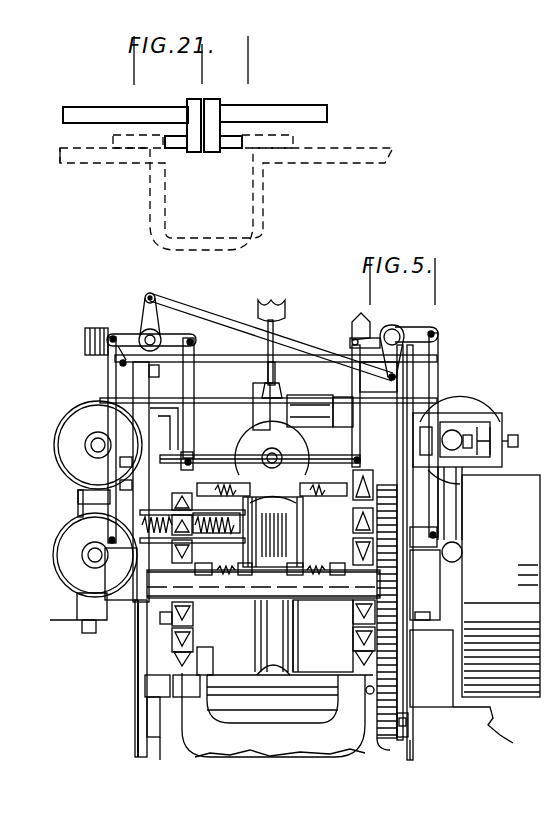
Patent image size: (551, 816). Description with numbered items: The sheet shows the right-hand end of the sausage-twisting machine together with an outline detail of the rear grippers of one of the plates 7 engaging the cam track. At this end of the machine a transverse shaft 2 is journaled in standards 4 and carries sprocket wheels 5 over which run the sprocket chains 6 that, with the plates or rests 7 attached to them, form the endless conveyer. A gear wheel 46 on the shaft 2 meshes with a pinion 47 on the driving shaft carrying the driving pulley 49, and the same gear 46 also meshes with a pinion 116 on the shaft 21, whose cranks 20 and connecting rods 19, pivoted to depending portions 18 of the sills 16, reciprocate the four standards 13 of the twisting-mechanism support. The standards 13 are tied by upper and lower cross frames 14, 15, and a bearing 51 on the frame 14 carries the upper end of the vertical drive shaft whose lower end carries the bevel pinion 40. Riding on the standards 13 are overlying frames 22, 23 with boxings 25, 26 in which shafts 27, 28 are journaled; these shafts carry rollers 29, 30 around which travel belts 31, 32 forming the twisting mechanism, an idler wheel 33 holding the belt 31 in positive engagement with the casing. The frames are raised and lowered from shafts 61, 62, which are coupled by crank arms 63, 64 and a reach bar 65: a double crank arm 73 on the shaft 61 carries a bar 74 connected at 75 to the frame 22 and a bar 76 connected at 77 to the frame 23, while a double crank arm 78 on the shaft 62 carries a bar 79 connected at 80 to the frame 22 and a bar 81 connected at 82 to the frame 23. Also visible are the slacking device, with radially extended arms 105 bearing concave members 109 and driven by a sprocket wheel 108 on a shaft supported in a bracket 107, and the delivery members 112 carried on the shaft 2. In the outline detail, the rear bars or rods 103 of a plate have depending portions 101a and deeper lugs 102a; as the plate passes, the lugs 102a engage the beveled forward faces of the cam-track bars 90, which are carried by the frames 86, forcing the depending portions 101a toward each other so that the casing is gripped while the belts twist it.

In FIG. 21, the depending portions 101a is at (190, 118).
In FIG. 21, the laterally extended lugs 102a is at (178, 140).
In FIG. 21, the bars or rods 103 is at (340, 98).
In FIG. 21, the frames 86 is at (226, 192).
In FIG. 21, the bars 90 is at (120, 143).
In FIG. 5, the transverse shaft 2 is at (263, 622).
In FIG. 5, the standards or uprights 4 is at (272, 573).
In FIG. 5, the sprocket wheels 5 is at (170, 642).
In FIG. 5, the sprocket chains 6 is at (224, 547).
In FIG. 5, the plates or rests 7 is at (323, 636).
In FIG. 5, the standards 13 is at (140, 470).
In FIG. 5, the cross frame or brace 14 is at (233, 358).
In FIG. 5, the cross frame or brace 15 is at (165, 623).
In FIG. 5, the sills or braces 16 is at (150, 663).
In FIG. 5, the depending portions 18 is at (143, 685).
In FIG. 5, the connecting rods 19 is at (135, 733).
In FIG. 5, the cranks 20 is at (303, 756).
In FIG. 5, the shaft 21 is at (275, 695).
In FIG. 5, the frame 22 is at (345, 461).
In FIG. 5, the frame 23 is at (347, 548).
In FIG. 5, the boxings 25 is at (92, 457).
In FIG. 5, the boxings 26 is at (500, 458).
In FIG. 5, the shaft 27 is at (85, 450).
In FIG. 5, the shaft 28 is at (72, 595).
In FIG. 5, the rollers or pulleys 29 is at (77, 427).
In FIG. 5, the rollers or pulleys 30 is at (62, 563).
In FIG. 5, the belt 31 is at (252, 386).
In FIG. 5, the belt 32 is at (58, 555).
In FIG. 5, the idler wheel 33 is at (272, 448).
In FIG. 5, the bevel pinion 40 is at (88, 624).
In FIG. 5, the gear wheel 46 is at (397, 641).
In FIG. 5, the pinion 47 is at (400, 588).
In FIG. 5, the driving pulley 49 is at (496, 609).
In FIG. 5, the bearing 51 is at (85, 339).
In FIG. 5, the shaft 61 is at (138, 333).
In FIG. 5, the shaft 62 is at (408, 330).
In FIG. 5, the crank arm 63 is at (147, 298).
In FIG. 5, the crank arm 64 is at (394, 358).
In FIG. 5, the reach bar or lever 65 is at (236, 300).
In FIG. 5, the double crank arm 73 is at (167, 337).
In FIG. 5, the bar 74 is at (194, 378).
In FIG. 5, the connection 75 is at (193, 465).
In FIG. 5, the bar 76 is at (110, 368).
In FIG. 5, the connection 77 is at (98, 538).
In FIG. 5, the double crank arm 78 is at (384, 332).
In FIG. 5, the bar 79 is at (357, 375).
In FIG. 5, the connection 80 is at (352, 463).
In FIG. 5, the bar 81 is at (437, 378).
In FIG. 5, the connection 82 is at (435, 534).
In FIG. 5, the radially extended arms 105 is at (275, 327).
In FIG. 5, the standard or bracket 107 is at (492, 421).
In FIG. 5, the sprocket wheel 108 is at (360, 322).
In FIG. 5, the members 109 is at (274, 307).
In FIG. 5, the members 112 is at (243, 529).
In FIG. 5, the pinion 116 is at (378, 740).